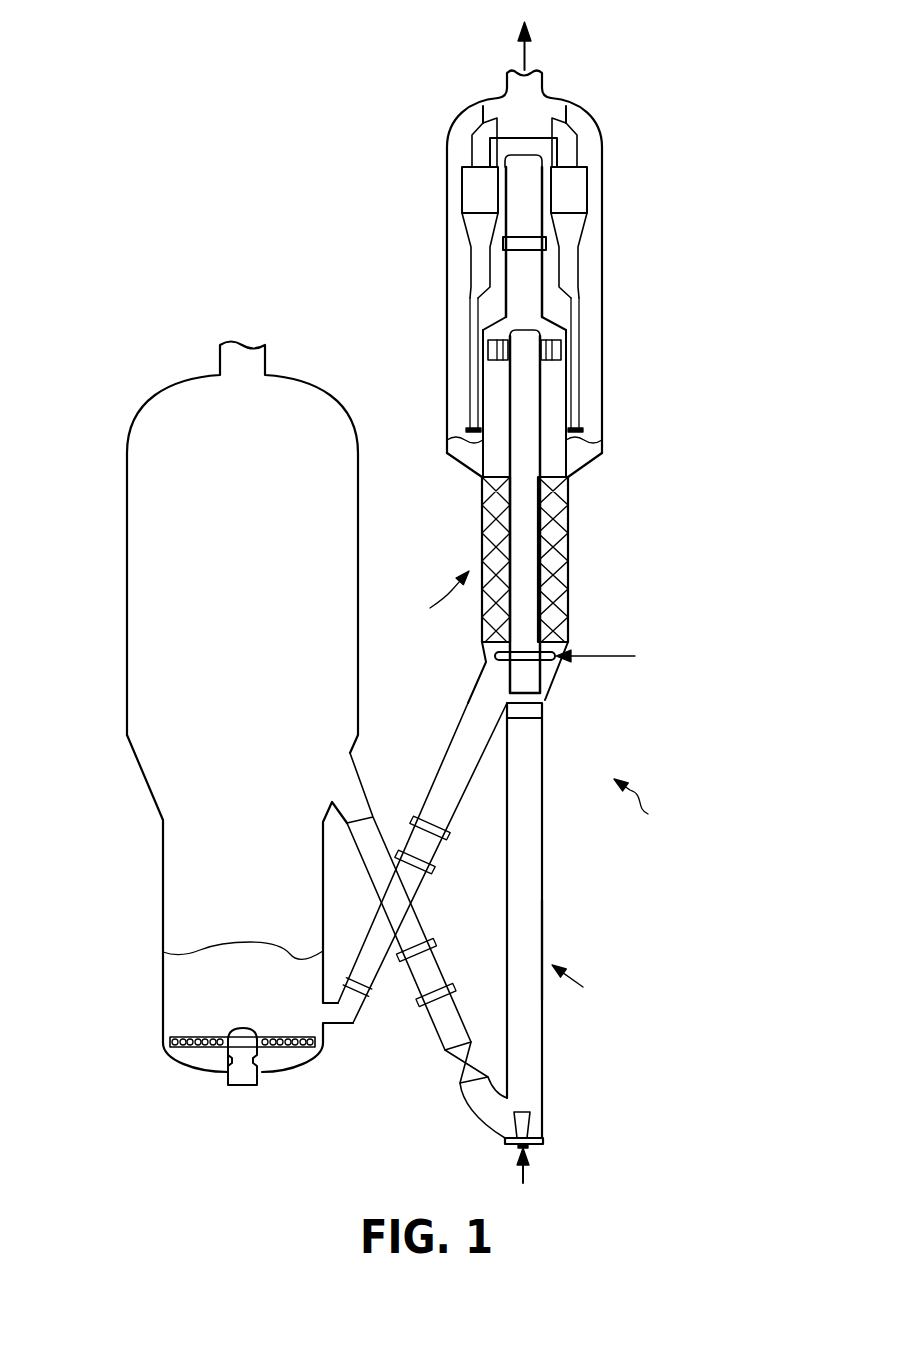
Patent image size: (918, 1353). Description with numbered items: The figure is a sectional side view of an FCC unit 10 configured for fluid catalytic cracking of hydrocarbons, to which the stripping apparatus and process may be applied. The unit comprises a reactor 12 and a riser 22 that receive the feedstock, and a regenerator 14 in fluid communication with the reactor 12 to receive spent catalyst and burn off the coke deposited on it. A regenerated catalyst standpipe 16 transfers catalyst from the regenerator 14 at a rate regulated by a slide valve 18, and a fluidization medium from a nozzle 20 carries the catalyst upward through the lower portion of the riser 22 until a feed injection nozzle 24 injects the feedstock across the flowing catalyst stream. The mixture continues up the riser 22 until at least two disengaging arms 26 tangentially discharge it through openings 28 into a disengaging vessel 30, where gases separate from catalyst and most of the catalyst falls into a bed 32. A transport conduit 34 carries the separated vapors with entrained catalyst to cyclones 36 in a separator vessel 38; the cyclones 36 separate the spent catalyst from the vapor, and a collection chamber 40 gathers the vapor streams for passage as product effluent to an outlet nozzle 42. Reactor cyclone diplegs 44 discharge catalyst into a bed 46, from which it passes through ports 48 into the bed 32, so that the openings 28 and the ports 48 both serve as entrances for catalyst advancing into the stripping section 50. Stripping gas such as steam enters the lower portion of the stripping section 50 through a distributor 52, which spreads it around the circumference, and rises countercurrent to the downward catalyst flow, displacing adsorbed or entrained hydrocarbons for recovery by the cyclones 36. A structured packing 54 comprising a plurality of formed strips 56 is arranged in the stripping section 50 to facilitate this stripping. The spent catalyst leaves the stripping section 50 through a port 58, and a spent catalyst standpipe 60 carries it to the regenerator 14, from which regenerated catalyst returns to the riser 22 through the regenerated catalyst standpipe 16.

The FCC unit 10 is at (652, 804).
The reactor 12 is at (604, 213).
The regenerator 14 is at (135, 489).
The regenerated catalyst standpipe 16 is at (417, 932).
The slide valve 18 is at (462, 1063).
The nozzle 20 is at (527, 1120).
The riser 22 is at (543, 738).
The feed injection nozzle 24 is at (546, 962).
The disengaging arms 26 is at (497, 345).
The openings 28 is at (492, 353).
The disengaging vessel 30 is at (555, 400).
The bed 32 is at (478, 232).
The transport conduit 34 is at (530, 272).
The cyclones 36 is at (566, 233).
The separator vessel 38 is at (598, 194).
The collection chamber 40 is at (550, 112).
The outlet nozzle 42 is at (533, 84).
The reactor cyclone diplegs 44 is at (478, 343).
The bed 46 is at (477, 463).
The ports 48 is at (480, 480).
The stripping section 50 is at (568, 516).
The distributor 52 is at (544, 664).
The structured packing 54 is at (430, 597).
The formed strips 56 is at (558, 553).
The port 58 is at (498, 688).
The spent catalyst standpipe 60 is at (448, 762).